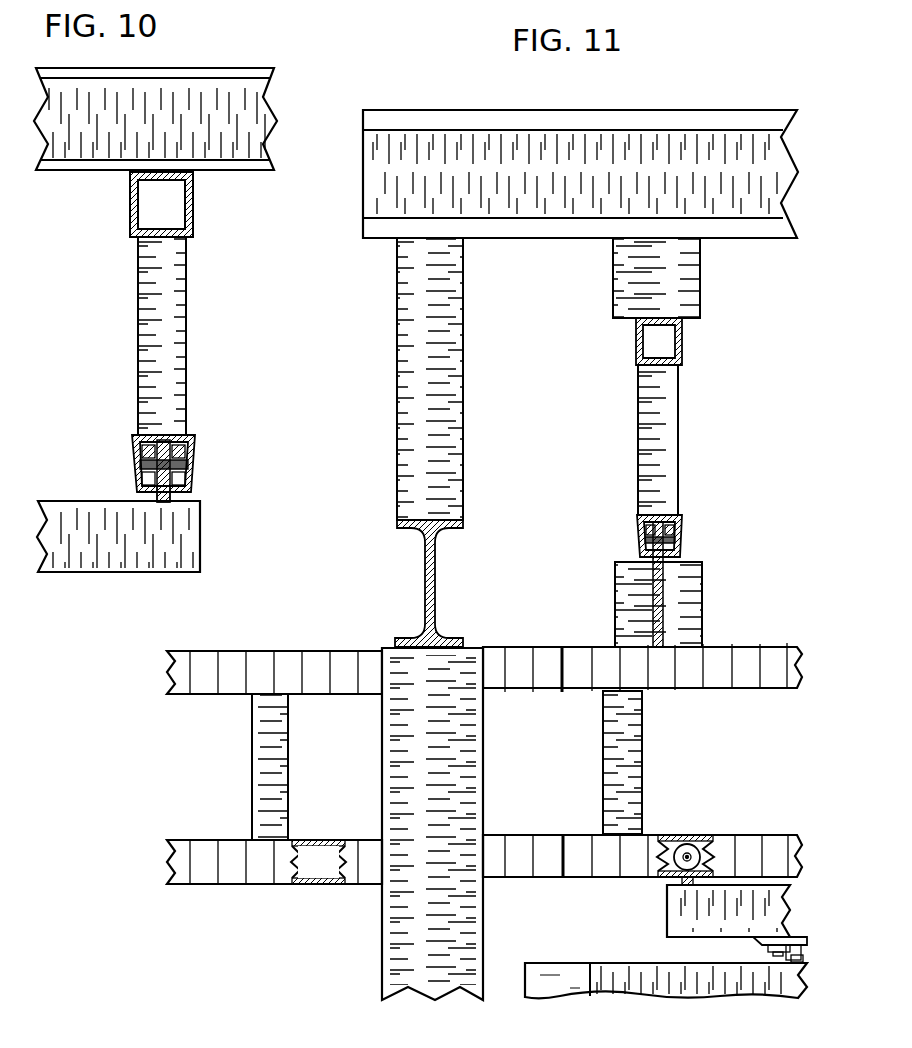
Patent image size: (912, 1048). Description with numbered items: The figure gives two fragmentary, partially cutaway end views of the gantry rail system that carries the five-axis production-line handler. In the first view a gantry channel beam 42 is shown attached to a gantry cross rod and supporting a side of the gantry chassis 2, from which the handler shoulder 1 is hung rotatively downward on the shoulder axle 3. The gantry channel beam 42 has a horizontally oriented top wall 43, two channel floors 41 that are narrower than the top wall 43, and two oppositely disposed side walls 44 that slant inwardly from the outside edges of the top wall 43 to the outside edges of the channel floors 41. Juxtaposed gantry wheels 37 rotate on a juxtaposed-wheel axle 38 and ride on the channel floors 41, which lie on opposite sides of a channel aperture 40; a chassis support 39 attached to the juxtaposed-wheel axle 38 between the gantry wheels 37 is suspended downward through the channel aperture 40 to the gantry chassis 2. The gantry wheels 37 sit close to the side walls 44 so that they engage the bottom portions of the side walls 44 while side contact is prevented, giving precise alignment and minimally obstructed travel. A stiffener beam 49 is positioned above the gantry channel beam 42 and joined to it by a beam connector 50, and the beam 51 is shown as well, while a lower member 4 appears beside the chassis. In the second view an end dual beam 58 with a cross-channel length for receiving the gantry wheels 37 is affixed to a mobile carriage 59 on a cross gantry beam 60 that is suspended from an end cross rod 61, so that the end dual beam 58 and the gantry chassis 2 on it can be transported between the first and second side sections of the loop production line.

In FIG. 11, the handler shoulder 1 is at (612, 986).
In FIG. 10, the gantry chassis 2 is at (105, 574).
In FIG. 11, the gantry chassis 2 is at (748, 924).
In FIG. 11, the shoulder axle 3 is at (793, 961).
In FIG. 11, the beam section 4 is at (548, 983).
In FIG. 10, the gantry wheels 37 is at (166, 452).
In FIG. 11, the gantry wheels 37 is at (687, 844).
In FIG. 10, the juxtaposed-wheel axle 38 is at (185, 466).
In FIG. 11, the juxtaposed-wheel axle 38 is at (692, 856).
In FIG. 10, the chassis support 39 is at (180, 452).
In FIG. 11, the chassis support 39 is at (686, 884).
In FIG. 10, the channel aperture 40 is at (150, 470).
In FIG. 10, the channel floors 41 is at (183, 497).
In FIG. 11, the channel floors 41 is at (322, 885).
In FIG. 10, the gantry channel beam 42 is at (232, 467).
In FIG. 11, the gantry channel beam 42 is at (192, 868).
In FIG. 10, the top wall 43 is at (150, 437).
In FIG. 11, the top wall 43 is at (322, 840).
In FIG. 10, the side walls 44 is at (145, 488).
In FIG. 10, the stiffener beam 49 is at (130, 199).
In FIG. 11, the stiffener beam 49 is at (200, 677).
In FIG. 10, the beam connector 50 is at (152, 297).
In FIG. 11, the beam connector 50 is at (270, 766).
In FIG. 10, the main vertical post / top beam 51 is at (212, 68).
In FIG. 11, the main vertical post / top beam 51 is at (420, 746).
In FIG. 11, the end dual beam 58 is at (773, 596).
In FIG. 11, the mobile carriage 59 is at (637, 535).
In FIG. 11, the cross gantry beam 60 is at (661, 367).
In FIG. 11, the end cross rod 61 is at (662, 110).